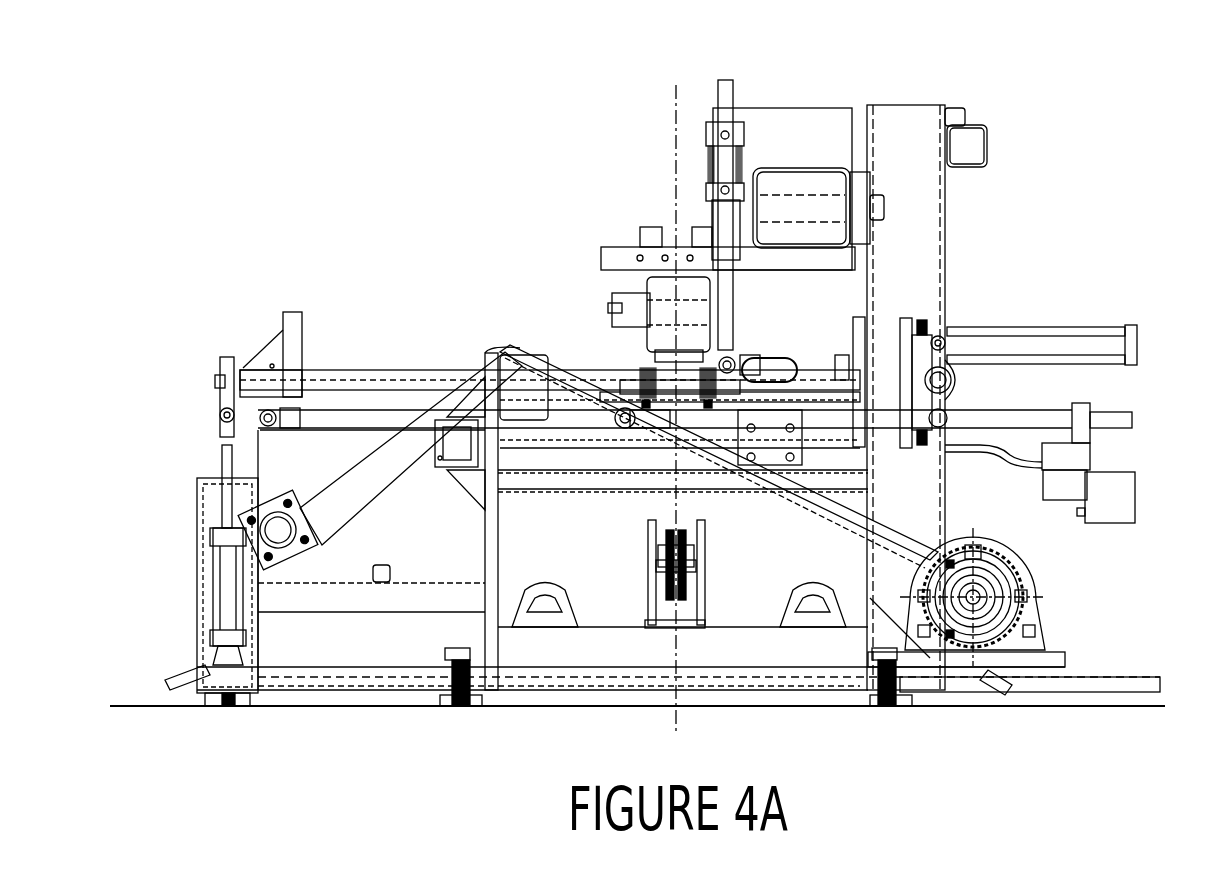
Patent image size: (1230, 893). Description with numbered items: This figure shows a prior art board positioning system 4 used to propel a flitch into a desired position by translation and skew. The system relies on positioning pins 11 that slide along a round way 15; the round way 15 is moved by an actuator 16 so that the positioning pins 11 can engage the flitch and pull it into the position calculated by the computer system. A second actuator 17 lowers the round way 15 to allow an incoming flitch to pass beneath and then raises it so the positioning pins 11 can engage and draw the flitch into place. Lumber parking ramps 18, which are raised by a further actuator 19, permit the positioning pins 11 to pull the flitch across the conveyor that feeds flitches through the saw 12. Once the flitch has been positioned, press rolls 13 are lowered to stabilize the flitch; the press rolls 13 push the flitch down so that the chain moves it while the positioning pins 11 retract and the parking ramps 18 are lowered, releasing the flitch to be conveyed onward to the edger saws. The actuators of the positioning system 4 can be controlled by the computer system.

The positioning system 4 is at (905, 107).
The positioning pins 11 is at (283, 328).
The saw 12 is at (660, 392).
The press rolls 13 is at (643, 298).
The round way 15 is at (397, 372).
The actuator 16 is at (1118, 470).
The actuator 17 is at (218, 570).
The lumber parking ramps 18 is at (520, 350).
The actuator 19 is at (462, 460).